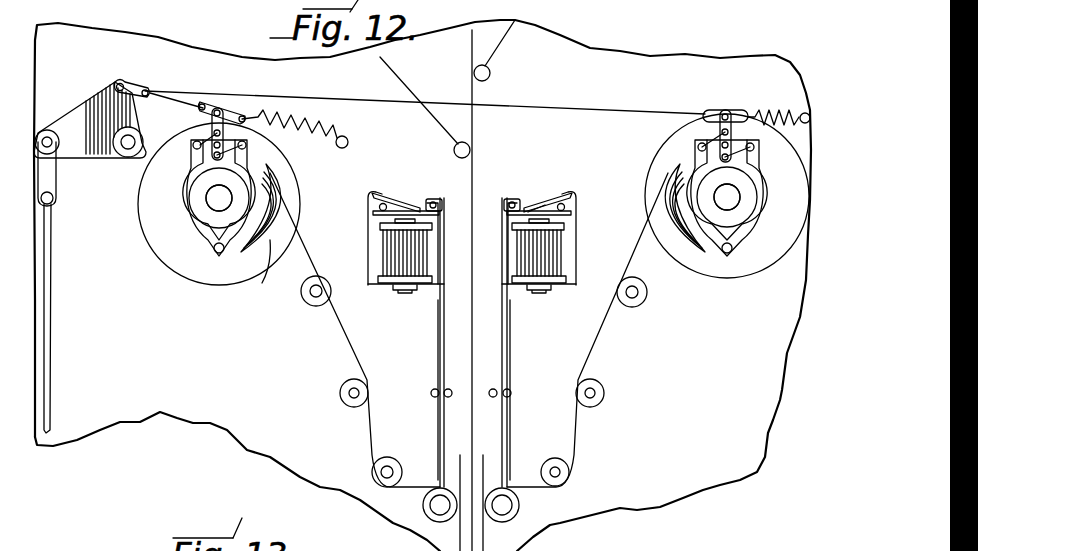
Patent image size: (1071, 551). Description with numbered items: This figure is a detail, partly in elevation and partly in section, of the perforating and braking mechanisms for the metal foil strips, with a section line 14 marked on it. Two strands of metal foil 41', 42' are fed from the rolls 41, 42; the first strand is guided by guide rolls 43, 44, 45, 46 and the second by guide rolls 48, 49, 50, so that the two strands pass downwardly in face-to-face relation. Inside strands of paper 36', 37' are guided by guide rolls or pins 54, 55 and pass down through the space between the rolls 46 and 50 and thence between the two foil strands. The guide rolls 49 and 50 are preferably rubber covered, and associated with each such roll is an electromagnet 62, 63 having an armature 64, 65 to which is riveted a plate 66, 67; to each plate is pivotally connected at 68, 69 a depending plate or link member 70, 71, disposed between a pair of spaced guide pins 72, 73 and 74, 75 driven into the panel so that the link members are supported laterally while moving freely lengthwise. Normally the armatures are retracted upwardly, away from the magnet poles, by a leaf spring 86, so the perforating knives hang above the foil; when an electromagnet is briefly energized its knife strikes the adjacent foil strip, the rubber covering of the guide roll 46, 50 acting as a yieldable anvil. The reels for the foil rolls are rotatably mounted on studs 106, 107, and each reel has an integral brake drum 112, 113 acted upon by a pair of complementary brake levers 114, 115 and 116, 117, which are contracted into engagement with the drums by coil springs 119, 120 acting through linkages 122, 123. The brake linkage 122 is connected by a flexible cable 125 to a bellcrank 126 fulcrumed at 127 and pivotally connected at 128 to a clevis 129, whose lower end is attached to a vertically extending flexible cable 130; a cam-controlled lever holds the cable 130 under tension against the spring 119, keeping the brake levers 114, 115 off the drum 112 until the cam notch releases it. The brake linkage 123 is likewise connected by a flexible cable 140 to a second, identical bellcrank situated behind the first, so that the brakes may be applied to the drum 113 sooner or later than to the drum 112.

The section line 14 is at (52, 94).
The inside strand of paper 36' is at (419, 100).
The inside strand of paper 37' is at (515, 43).
The roll of metal foil 41 is at (251, 281).
The strand of metal foil 41' is at (357, 330).
The roll of metal foil 42 is at (641, 264).
The strand of metal foil 42' is at (585, 330).
The guide roll 43 is at (314, 304).
The guide roll 44 is at (346, 405).
The guide roll 45 is at (390, 462).
The guide roll 46 is at (435, 515).
The guide roll 48 is at (603, 388).
The guide roll 49 is at (565, 462).
The guide roll 50 is at (507, 520).
The guide roll or pin 54 is at (454, 150).
The guide roll or pin 55 is at (490, 73).
The electromagnet 62 is at (390, 285).
The electromagnet 63 is at (535, 285).
The armature 64 is at (400, 197).
The armature 65 is at (534, 207).
The plate 66 is at (424, 200).
The plate 67 is at (530, 203).
The pivotal connection 68 is at (443, 200).
The pivotal connection 69 is at (511, 200).
The depending plate or link member 70 is at (440, 345).
The depending plate or link member 71 is at (505, 343).
The guide pin 72 is at (432, 390).
The guide pin 73 is at (449, 389).
The guide pin 74 is at (494, 389).
The guide pin 75 is at (511, 393).
The leaf spring 86 is at (368, 228).
The stud 106 is at (210, 205).
The stud 107 is at (718, 228).
The brake drum 112 is at (200, 202).
The brake drum 113 is at (748, 200).
The brake lever 114 is at (207, 183).
The brake lever 115 is at (272, 176).
The brake lever 116 is at (688, 192).
The brake lever 117 is at (750, 255).
The coil spring 119 is at (276, 120).
The coil spring 120 is at (770, 115).
The brake linkage 122 is at (210, 128).
The brake linkage 123 is at (712, 135).
The flexible cable 125 is at (183, 90).
The bellcrank 126 is at (115, 82).
The fulcrum 127 is at (126, 158).
The pivotal connection 128 is at (122, 136).
The clevis 129 is at (56, 180).
The flexible cable 130 is at (46, 262).
The flexible cable 140 is at (607, 112).